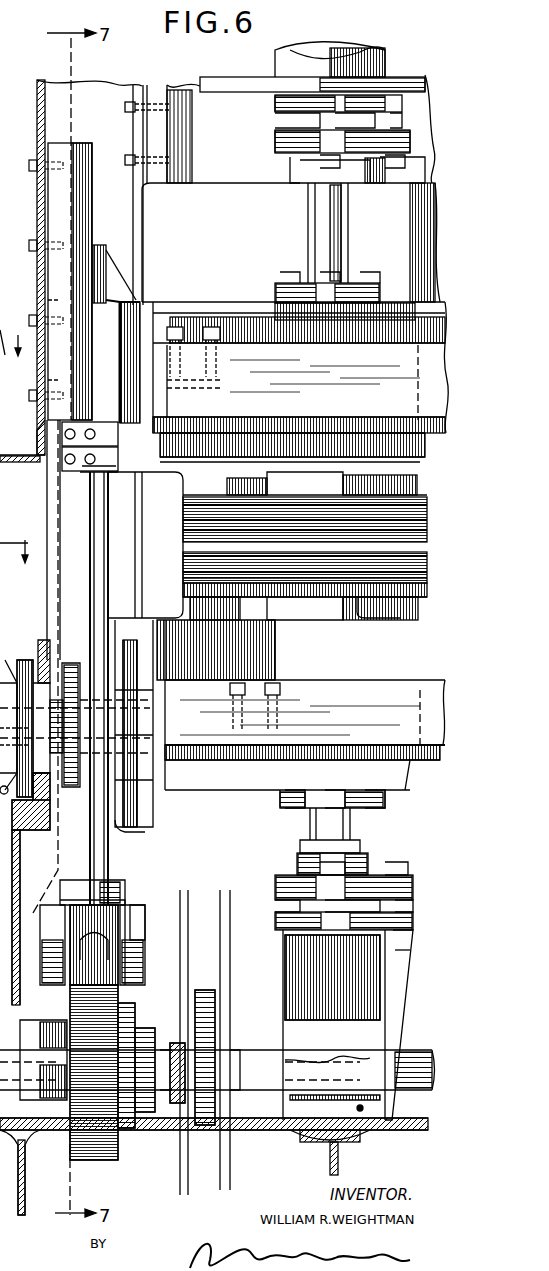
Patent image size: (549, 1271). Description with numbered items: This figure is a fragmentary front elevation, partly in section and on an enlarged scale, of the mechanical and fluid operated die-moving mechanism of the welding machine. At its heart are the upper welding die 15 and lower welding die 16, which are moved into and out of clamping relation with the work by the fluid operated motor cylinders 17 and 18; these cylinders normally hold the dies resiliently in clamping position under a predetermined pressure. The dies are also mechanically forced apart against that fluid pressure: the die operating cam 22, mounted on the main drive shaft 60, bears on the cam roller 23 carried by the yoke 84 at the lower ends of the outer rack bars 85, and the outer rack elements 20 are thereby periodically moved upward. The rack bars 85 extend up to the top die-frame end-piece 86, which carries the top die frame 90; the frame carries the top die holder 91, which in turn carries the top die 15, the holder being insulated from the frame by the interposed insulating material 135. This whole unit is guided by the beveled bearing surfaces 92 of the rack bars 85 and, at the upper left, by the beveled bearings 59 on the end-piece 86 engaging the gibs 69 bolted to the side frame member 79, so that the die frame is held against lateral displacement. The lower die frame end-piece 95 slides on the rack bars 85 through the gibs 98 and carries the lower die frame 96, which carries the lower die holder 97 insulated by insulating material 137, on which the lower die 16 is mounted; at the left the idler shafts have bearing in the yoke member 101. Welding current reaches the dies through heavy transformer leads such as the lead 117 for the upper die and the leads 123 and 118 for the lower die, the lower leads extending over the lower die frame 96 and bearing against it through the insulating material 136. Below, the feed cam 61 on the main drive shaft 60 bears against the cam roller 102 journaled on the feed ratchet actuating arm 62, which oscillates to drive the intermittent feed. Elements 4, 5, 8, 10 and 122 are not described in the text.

The frame 4 is at (5, 421).
The frame member 5 is at (5, 445).
The section line 8 is at (12, 353).
The section line 10 is at (15, 559).
The upper welding die 15 is at (182, 538).
The lower welding die 16 is at (182, 560).
The fluid operated motor cylinder 17 is at (385, 60).
The fluid operated motor cylinder 18 is at (385, 992).
The outer rack element 20 is at (70, 785).
The die operating cam 22 is at (105, 1160).
The cam roller 23 is at (85, 985).
The beveled bearing 59 is at (106, 255).
The main drive shaft 60 is at (415, 1058).
The feed cam 61 is at (208, 1120).
The feed ratchet actuating arm 62 is at (180, 990).
The gib 69 is at (82, 148).
The side frame member 79 is at (36, 152).
The yoke 84 is at (125, 905).
The outer rack bar 85 is at (59, 540).
The top die-frame end-piece 86 is at (120, 300).
The top die frame 90 is at (237, 325).
The top die holder 91 is at (192, 487).
The beveled bearing surface 92 is at (106, 552).
The lower die frame end-piece 95 is at (140, 825).
The lower die frame 96 is at (405, 607).
The lower die holder 97 is at (420, 566).
The gib 98 is at (153, 852).
The yoke member 101 is at (24, 660).
The cam roller 102 is at (205, 1055).
The transformer lead 117 is at (318, 378).
The transformer lead 118 is at (422, 672).
The ring 122 is at (345, 485).
The transformer lead 123 is at (290, 603).
The insulating material 135 is at (360, 490).
The insulating material 136 is at (365, 612).
The insulating material 137 is at (415, 592).